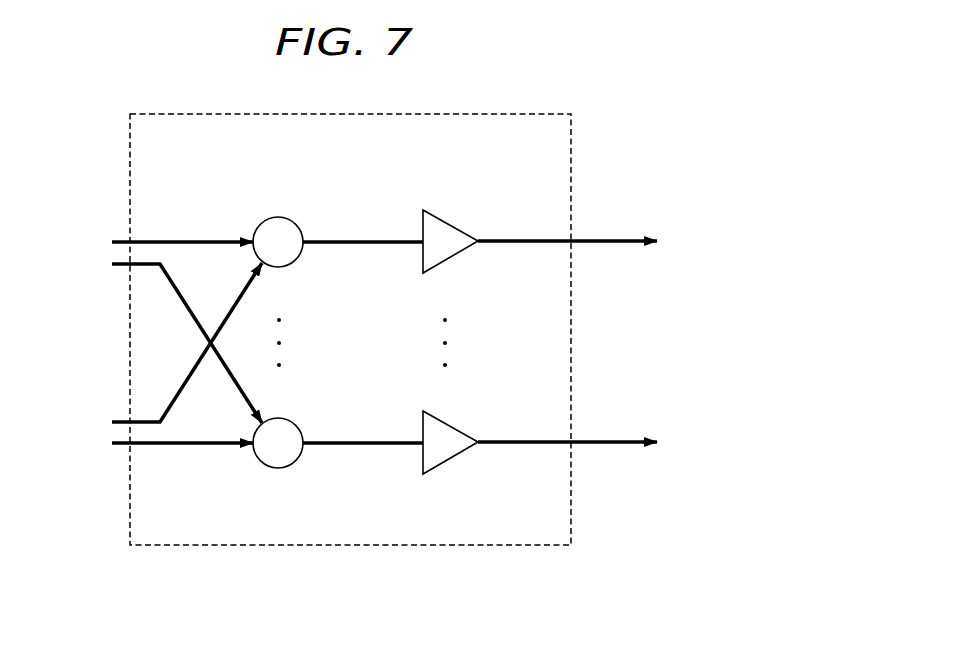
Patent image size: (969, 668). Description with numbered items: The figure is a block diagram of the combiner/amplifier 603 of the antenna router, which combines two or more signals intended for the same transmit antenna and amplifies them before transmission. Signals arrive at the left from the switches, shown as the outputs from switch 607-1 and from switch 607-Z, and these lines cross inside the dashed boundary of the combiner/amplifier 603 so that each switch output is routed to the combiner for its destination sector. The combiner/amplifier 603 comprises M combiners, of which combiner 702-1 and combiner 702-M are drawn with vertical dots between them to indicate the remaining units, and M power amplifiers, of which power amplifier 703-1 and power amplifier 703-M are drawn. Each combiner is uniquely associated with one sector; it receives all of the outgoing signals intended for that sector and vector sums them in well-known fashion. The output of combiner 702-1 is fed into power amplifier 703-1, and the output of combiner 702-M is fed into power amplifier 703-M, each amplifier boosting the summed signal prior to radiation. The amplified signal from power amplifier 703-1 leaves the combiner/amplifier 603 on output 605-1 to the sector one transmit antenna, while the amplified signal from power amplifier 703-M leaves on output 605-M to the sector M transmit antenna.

The combiner/amplifier 603 is at (153, 113).
The combiner 702-1 is at (282, 217).
The combiner 702-M is at (275, 468).
The power amplifier 703-1 is at (442, 217).
The power amplifier 703-M is at (443, 465).
The output to sector 1 transmit antenna 605-1 is at (598, 238).
The output to sector M transmit antenna 605-M is at (593, 440).
The switch 607-1 is at (151, 316).
The switch 607-Z is at (151, 370).